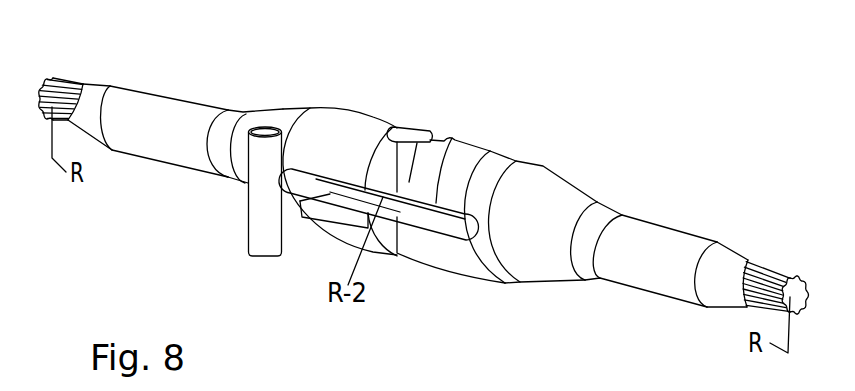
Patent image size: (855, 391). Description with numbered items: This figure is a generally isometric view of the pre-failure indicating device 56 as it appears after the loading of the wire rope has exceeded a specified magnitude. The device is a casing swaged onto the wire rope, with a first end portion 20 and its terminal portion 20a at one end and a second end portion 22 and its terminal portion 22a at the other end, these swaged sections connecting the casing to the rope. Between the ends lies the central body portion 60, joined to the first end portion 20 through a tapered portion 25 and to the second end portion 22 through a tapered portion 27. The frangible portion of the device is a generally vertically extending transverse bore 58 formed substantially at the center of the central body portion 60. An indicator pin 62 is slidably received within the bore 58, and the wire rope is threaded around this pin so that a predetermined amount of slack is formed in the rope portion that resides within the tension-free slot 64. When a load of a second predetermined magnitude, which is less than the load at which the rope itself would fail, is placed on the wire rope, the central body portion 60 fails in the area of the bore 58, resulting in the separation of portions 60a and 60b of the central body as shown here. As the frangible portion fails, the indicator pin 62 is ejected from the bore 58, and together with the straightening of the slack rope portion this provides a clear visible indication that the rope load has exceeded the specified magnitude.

The first end portion 20 is at (163, 103).
The terminal portion 20a is at (97, 90).
The second end portion 22 is at (658, 228).
The terminal portion 22a is at (738, 252).
The tapered portion 25 is at (282, 118).
The tapered portion 27 is at (562, 188).
The pre-failure indicating device 56 is at (360, 66).
The bore 58 is at (402, 124).
The central body portion 60 is at (490, 143).
The portion of central body 60a is at (372, 124).
The portion of central body 60b is at (470, 153).
The indicator pin 62 is at (258, 220).
The tension-free slot 64 is at (335, 202).